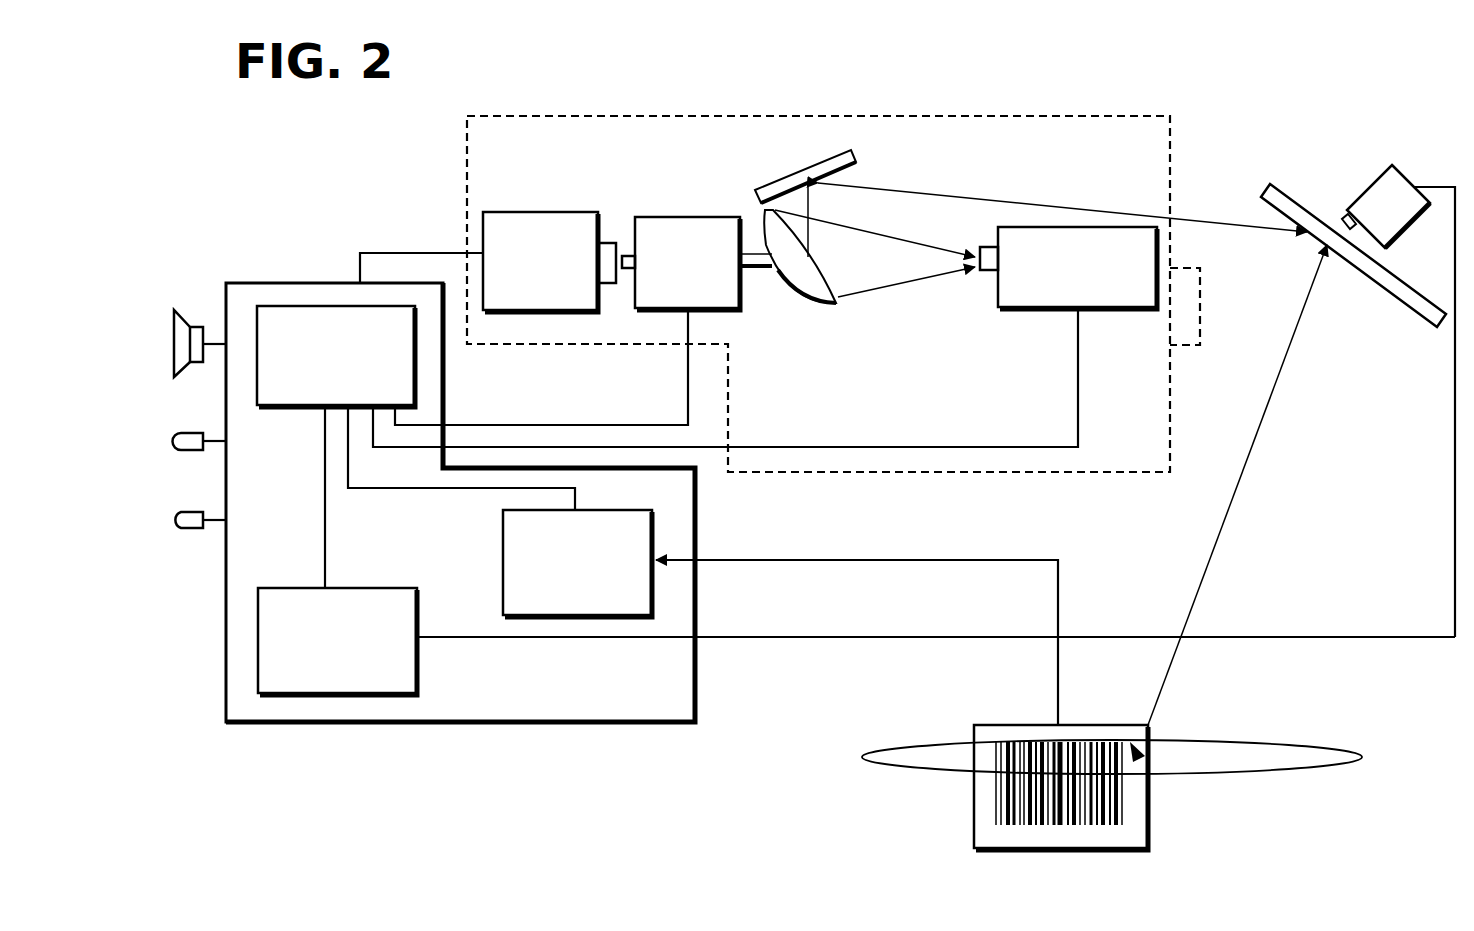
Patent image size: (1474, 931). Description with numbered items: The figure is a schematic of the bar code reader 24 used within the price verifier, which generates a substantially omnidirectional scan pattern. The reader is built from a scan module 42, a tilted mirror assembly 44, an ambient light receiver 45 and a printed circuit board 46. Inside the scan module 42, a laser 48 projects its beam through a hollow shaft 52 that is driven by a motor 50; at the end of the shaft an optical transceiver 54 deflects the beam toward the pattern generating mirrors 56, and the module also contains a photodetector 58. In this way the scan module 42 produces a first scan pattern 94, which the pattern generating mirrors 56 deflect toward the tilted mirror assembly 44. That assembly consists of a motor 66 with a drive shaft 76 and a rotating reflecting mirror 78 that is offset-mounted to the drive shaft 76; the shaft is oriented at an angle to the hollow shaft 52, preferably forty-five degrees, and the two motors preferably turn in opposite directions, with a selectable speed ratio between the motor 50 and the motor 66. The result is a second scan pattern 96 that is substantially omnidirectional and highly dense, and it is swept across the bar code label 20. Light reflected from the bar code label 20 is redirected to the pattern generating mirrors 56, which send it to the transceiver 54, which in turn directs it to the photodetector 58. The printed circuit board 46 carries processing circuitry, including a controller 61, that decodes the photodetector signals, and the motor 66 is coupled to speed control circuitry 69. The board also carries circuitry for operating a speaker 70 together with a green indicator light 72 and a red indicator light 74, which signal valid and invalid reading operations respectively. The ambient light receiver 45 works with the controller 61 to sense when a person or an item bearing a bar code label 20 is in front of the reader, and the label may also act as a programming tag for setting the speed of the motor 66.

The bar code label 20 is at (1125, 808).
The bar code reader 24 is at (1192, 98).
The scan module 42 is at (933, 116).
The tilted mirror assembly 44 is at (1350, 123).
The ambient light receiver 45 is at (503, 540).
The printed circuit board 46 is at (300, 283).
The laser 48 is at (532, 212).
The motor 50 is at (655, 217).
The hollow shaft 52 is at (760, 267).
The optical transceiver 54 is at (838, 305).
The pattern generating mirrors 56 is at (800, 178).
The photodetector 58 is at (1025, 309).
The controller 61 is at (300, 408).
The motor 66 is at (1395, 165).
The speed control circuitry 69 is at (296, 588).
The speaker 70 is at (174, 316).
The green indicator light 72 is at (174, 437).
The red indicator light 74 is at (174, 515).
The drive shaft 76 is at (1343, 227).
The rotating reflecting mirror 78 is at (1272, 188).
The first scan pattern 94 is at (998, 202).
The second scan pattern 96 is at (1275, 735).